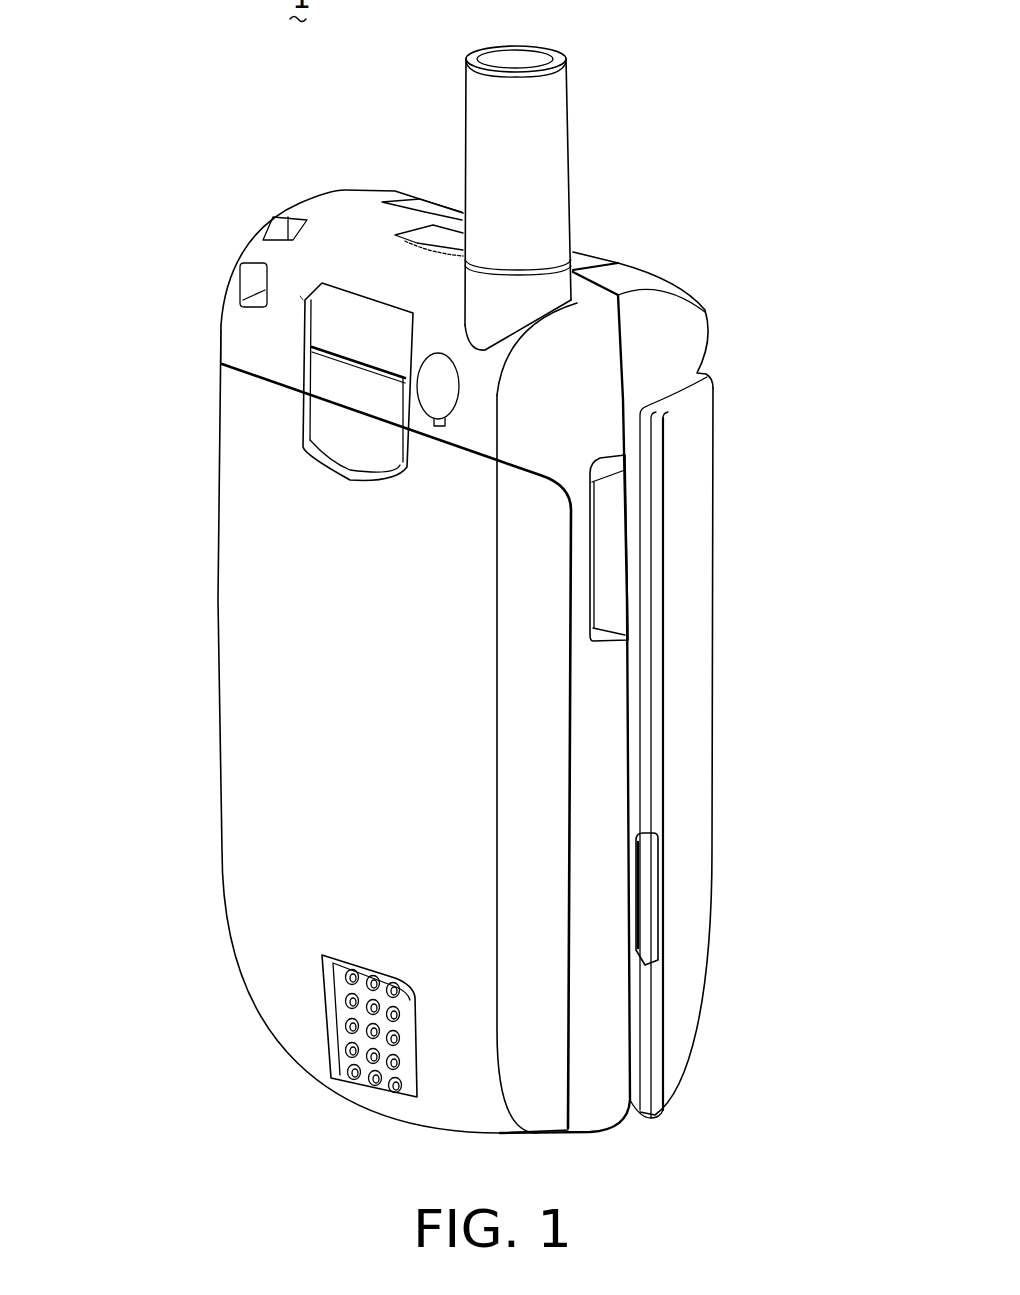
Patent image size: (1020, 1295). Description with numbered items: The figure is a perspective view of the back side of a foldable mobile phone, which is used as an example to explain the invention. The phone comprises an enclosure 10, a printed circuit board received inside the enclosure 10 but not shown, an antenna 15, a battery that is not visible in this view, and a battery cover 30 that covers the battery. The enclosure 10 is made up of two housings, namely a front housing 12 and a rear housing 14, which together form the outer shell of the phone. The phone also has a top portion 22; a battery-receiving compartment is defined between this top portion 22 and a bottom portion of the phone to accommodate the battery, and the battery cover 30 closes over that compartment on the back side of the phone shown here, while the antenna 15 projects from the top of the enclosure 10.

The enclosure 10 is at (733, 540).
The front housing 12 is at (662, 332).
The rear housing 14 is at (607, 905).
The antenna 15 is at (527, 155).
The top portion 22 is at (262, 342).
The battery cover 30 is at (274, 745).